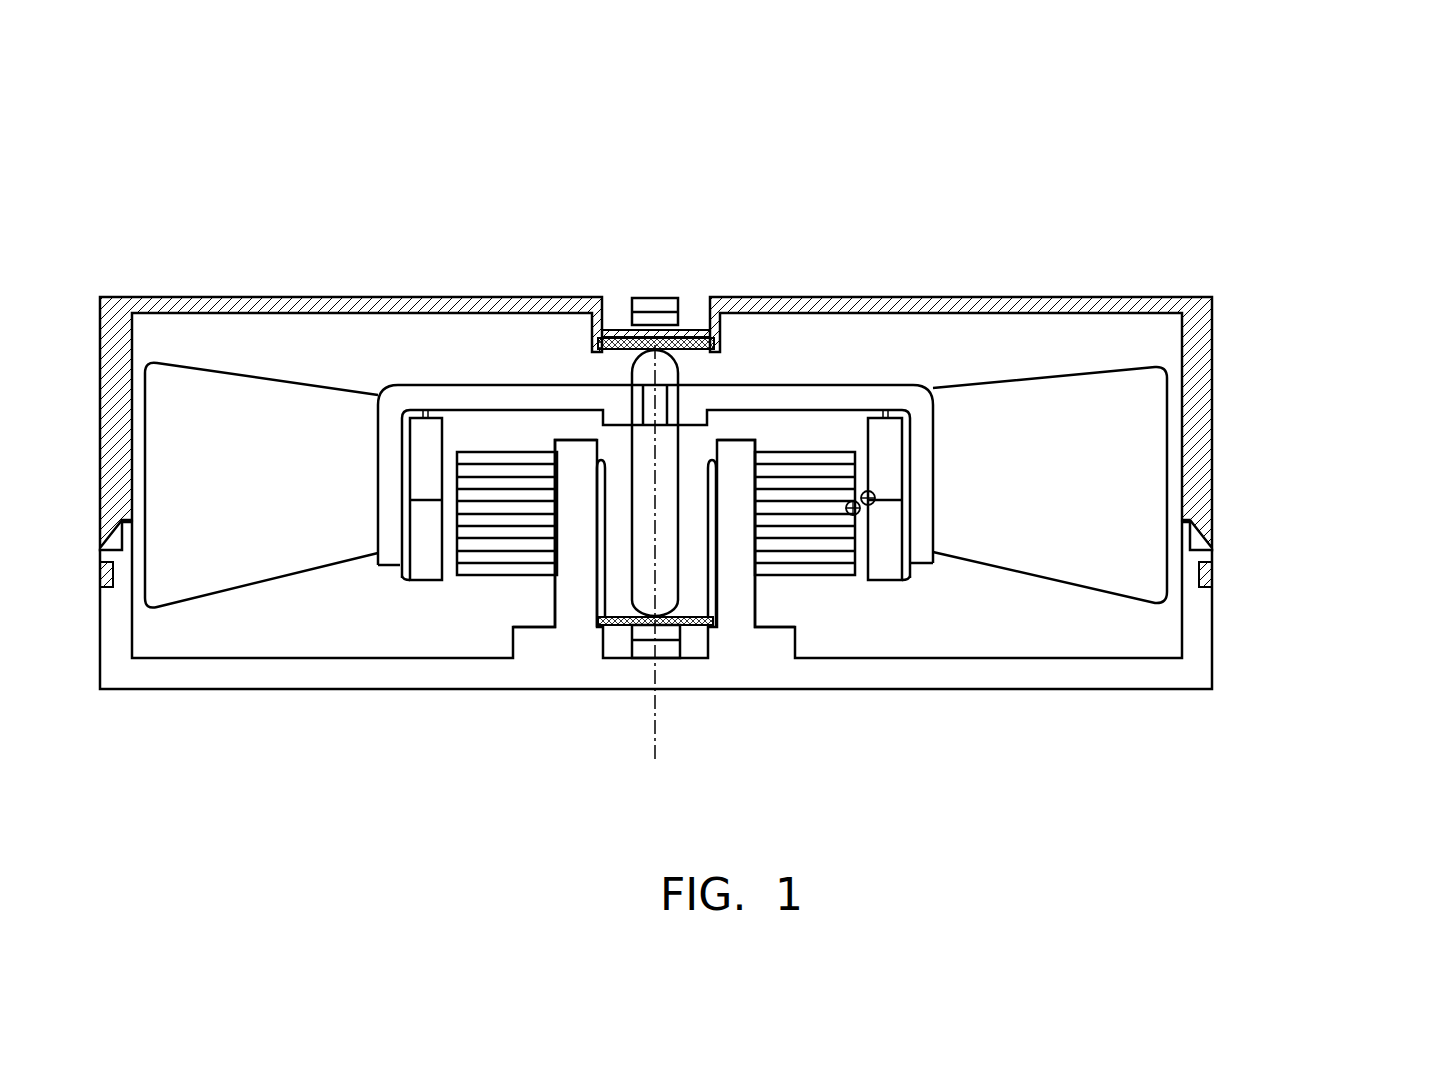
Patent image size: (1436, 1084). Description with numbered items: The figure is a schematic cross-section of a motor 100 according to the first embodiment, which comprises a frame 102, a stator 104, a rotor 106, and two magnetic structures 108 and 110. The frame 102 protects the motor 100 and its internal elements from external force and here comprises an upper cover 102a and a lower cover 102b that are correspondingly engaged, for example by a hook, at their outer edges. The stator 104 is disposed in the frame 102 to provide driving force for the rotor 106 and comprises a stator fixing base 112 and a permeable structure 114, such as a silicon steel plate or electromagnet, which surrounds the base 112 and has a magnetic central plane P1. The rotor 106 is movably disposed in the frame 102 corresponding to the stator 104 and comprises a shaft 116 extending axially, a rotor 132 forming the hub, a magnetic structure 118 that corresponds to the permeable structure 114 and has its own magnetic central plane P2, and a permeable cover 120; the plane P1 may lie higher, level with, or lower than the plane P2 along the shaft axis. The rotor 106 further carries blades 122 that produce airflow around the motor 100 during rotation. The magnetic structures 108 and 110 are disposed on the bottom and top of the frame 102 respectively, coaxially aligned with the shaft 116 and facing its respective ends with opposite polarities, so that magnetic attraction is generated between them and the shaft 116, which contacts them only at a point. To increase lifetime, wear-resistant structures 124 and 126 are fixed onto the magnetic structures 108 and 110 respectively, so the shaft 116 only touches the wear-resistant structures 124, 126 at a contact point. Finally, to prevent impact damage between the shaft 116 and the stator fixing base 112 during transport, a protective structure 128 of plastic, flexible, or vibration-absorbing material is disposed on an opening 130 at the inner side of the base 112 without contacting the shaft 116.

The motor 100 is at (158, 178).
The frame 102 is at (1370, 478).
The upper cover 102a is at (1207, 477).
The lower cover 102b is at (1198, 610).
The stator 104 is at (573, 792).
The rotor 106 is at (1108, 138).
The magnetic structure 108 is at (668, 648).
The magnetic structure 110 is at (642, 300).
The stator fixing base 112 is at (573, 603).
The permeable structure 114 is at (473, 562).
The shaft 116 is at (670, 372).
The magnetic structure 118 is at (877, 447).
The permeable cover 120 is at (897, 413).
The blades 122 is at (1045, 400).
The wear-resistant structure 124 is at (693, 627).
The wear-resistant structure 126 is at (622, 330).
The protective structure 128 is at (600, 495).
The opening 130 is at (598, 537).
The rotor 132 is at (817, 397).
The magnetic central plane P1 is at (860, 517).
The magnetic central plane P2 is at (883, 485).